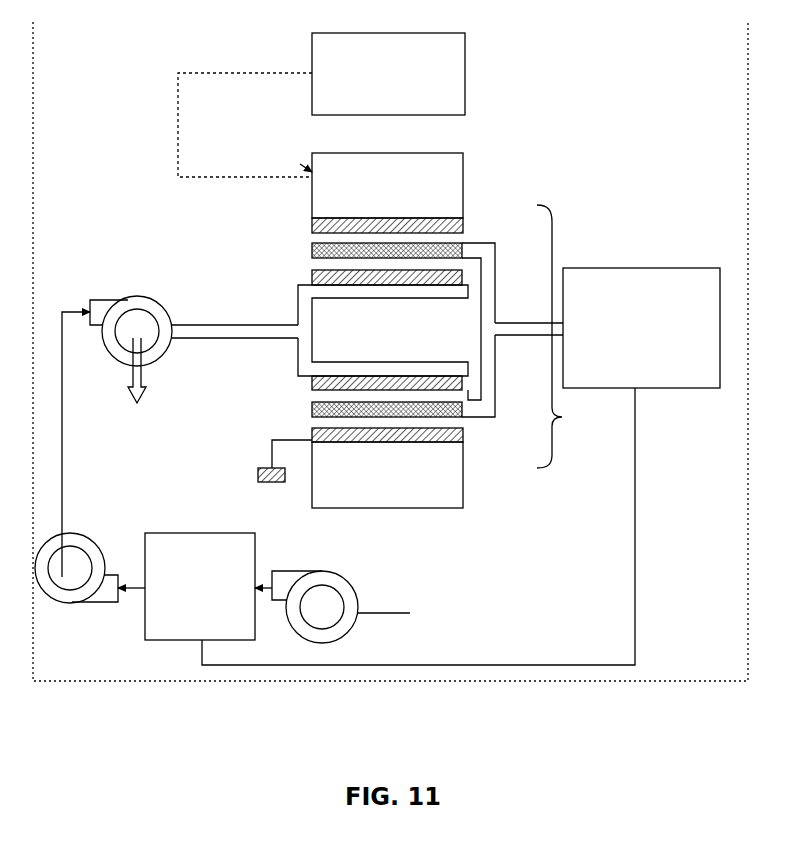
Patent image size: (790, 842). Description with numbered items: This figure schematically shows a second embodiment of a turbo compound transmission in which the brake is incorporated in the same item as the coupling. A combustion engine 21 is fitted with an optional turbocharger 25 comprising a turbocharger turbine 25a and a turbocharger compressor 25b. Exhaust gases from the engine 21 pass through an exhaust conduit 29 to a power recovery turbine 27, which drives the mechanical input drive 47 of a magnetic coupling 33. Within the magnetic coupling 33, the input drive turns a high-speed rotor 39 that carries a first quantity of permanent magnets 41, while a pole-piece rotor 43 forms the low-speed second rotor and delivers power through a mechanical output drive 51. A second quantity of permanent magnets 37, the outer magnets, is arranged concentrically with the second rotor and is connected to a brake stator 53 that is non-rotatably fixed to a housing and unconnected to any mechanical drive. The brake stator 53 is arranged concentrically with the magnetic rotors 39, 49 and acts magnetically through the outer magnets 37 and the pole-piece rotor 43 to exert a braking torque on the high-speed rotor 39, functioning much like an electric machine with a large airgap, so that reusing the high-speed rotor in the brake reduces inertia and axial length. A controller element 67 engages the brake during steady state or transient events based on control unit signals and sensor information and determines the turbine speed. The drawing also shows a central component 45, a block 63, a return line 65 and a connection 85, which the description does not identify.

The combustion engine 21 is at (143, 628).
The turbocharger 25 is at (297, 558).
The turbocharger turbine 25a is at (88, 550).
The turbocharger compressor 25b is at (396, 616).
The power recovery turbine 27 is at (130, 295).
The exhaust conduit 29 is at (62, 470).
The magnetic coupling 33 is at (564, 336).
The second quantity of permanent magnets 37 is at (308, 228).
The high-speed rotor 39 is at (292, 366).
The first quantity of permanent magnets 41 is at (312, 273).
The pole-piece rotor 43 is at (307, 257).
The core 45 is at (402, 358).
The mechanical input drive 47 is at (270, 323).
The magnetic rotor 49 is at (500, 417).
The mechanical output drive 51 is at (507, 323).
The brake stator 53 is at (466, 207).
The radiator 63 is at (663, 390).
The return conduit 65 is at (637, 545).
The controller element 67 is at (310, 60).
The conduit 85 is at (93, 518).